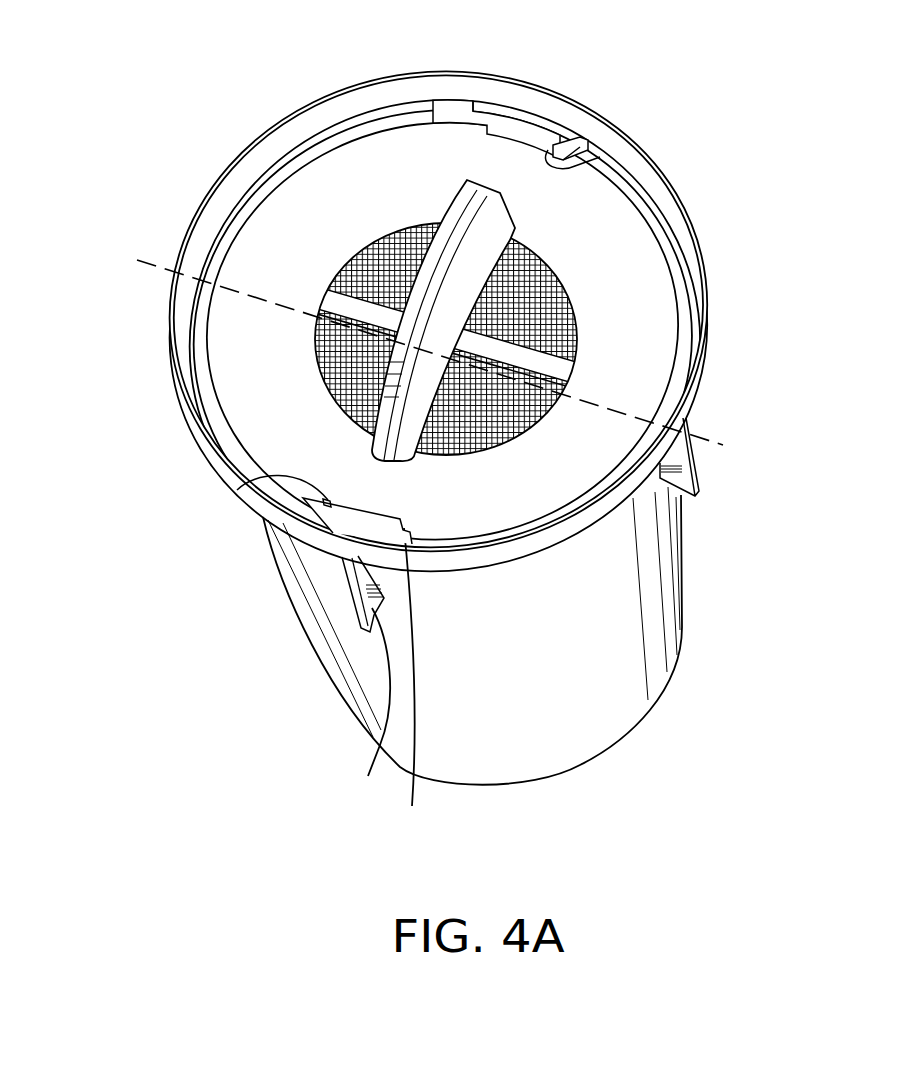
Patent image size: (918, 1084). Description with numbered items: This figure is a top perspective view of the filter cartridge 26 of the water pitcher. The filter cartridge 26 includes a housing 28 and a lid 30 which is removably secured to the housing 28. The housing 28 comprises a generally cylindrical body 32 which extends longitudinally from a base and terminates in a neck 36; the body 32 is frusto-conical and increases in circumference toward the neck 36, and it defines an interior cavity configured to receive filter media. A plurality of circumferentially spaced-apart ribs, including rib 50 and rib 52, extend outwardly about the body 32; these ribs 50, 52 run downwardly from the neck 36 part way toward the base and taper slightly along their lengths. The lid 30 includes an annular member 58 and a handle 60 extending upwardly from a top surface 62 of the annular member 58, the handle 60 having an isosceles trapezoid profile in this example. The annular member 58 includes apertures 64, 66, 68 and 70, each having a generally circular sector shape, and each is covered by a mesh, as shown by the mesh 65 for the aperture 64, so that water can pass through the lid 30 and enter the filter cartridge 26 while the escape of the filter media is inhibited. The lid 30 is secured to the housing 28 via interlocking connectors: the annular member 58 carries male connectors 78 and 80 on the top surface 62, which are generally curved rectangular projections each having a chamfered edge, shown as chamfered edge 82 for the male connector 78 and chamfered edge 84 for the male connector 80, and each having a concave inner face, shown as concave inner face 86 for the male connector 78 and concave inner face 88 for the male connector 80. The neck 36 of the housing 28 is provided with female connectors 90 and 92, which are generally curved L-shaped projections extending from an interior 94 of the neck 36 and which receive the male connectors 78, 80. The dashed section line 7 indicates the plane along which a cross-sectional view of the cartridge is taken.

The section line 7- 7 is at (137, 260).
The filter cartridge 26 is at (152, 438).
The housing 28 is at (695, 528).
The lid 30 is at (433, 110).
The body 32 is at (668, 607).
The neck 36 is at (672, 213).
The rib 50 is at (329, 661).
The rib 52 is at (683, 480).
The annular member 58 is at (343, 165).
The handle 60 is at (493, 213).
The top surface 62 is at (377, 147).
The aperture 64 is at (360, 248).
The mesh 65 is at (350, 270).
The aperture 66 is at (577, 329).
The aperture 68 is at (317, 368).
The aperture 70 is at (510, 442).
The male connector 78 is at (507, 130).
The male connector 80 is at (335, 508).
The chamfered edge 82 is at (561, 148).
The chamfered edge 84 is at (262, 486).
The concave inner face 86 is at (572, 160).
The concave inner face 88 is at (347, 566).
The female connector 90 is at (543, 119).
The female connector 92 is at (412, 682).
The interior 94 is at (660, 185).